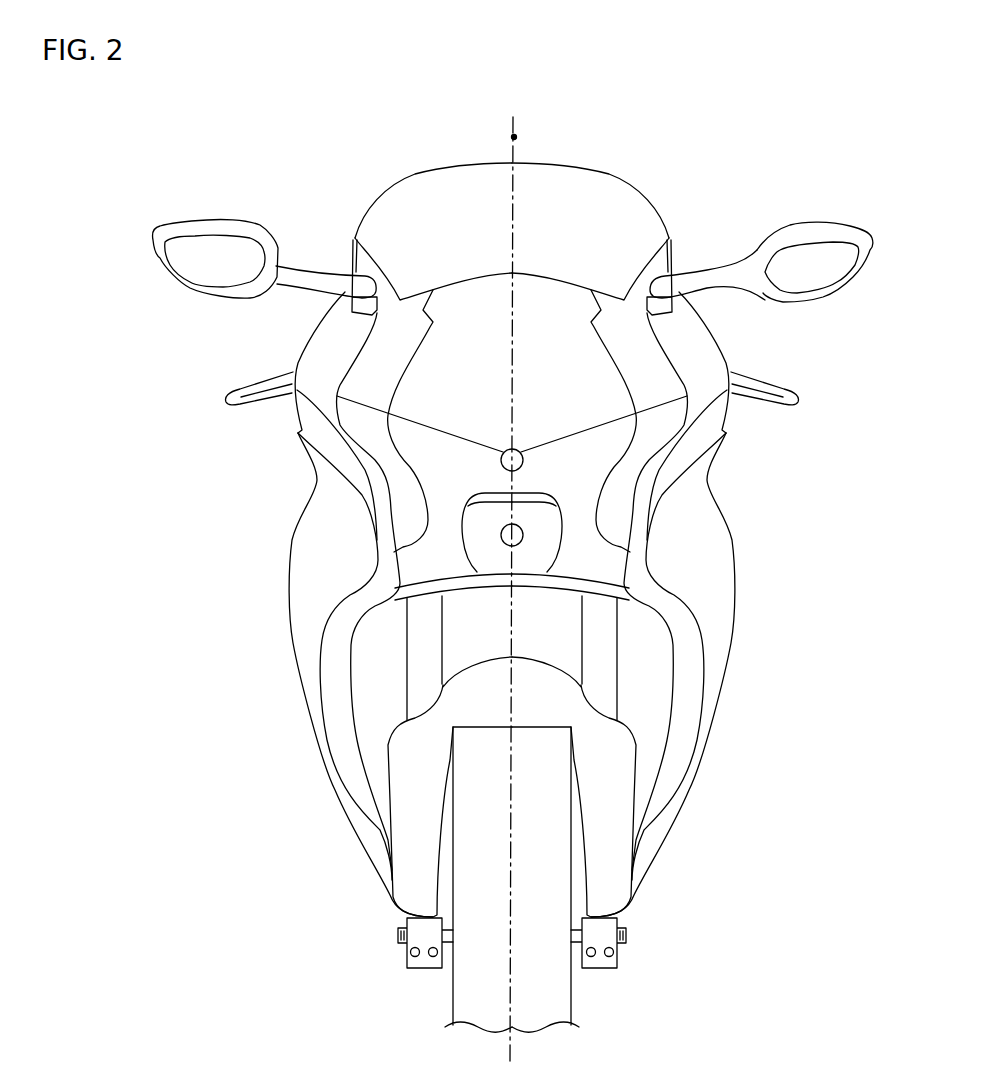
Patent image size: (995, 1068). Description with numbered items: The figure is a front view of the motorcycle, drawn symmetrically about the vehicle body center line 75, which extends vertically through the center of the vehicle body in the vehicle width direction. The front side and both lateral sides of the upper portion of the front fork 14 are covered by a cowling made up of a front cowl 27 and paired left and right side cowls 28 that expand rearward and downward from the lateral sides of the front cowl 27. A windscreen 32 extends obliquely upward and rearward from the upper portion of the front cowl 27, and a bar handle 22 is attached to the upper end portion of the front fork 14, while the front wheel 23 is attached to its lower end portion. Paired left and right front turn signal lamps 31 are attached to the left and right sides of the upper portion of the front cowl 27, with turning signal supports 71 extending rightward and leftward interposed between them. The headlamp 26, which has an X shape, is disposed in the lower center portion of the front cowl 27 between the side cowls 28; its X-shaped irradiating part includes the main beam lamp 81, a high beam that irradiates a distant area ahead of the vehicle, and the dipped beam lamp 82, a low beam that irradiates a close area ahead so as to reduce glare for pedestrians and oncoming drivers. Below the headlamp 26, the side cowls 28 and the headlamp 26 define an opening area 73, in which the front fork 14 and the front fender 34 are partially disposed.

The front fork 14 is at (607, 653).
The bar handle 22 is at (770, 378).
The front wheel 23 is at (553, 1002).
The headlamp 26 is at (411, 514).
The front cowl 27 is at (288, 357).
The side cowl 28 is at (300, 668).
The front turn signal lamp 31 is at (187, 250).
The windscreen 32 is at (425, 192).
The front fender 34 is at (407, 805).
The turning signal support 71 is at (297, 272).
The opening area 73 is at (662, 772).
The vehicle body center line 75 is at (514, 137).
The main beam lamp 81 is at (540, 540).
The dipped beam lamp 82 is at (564, 469).